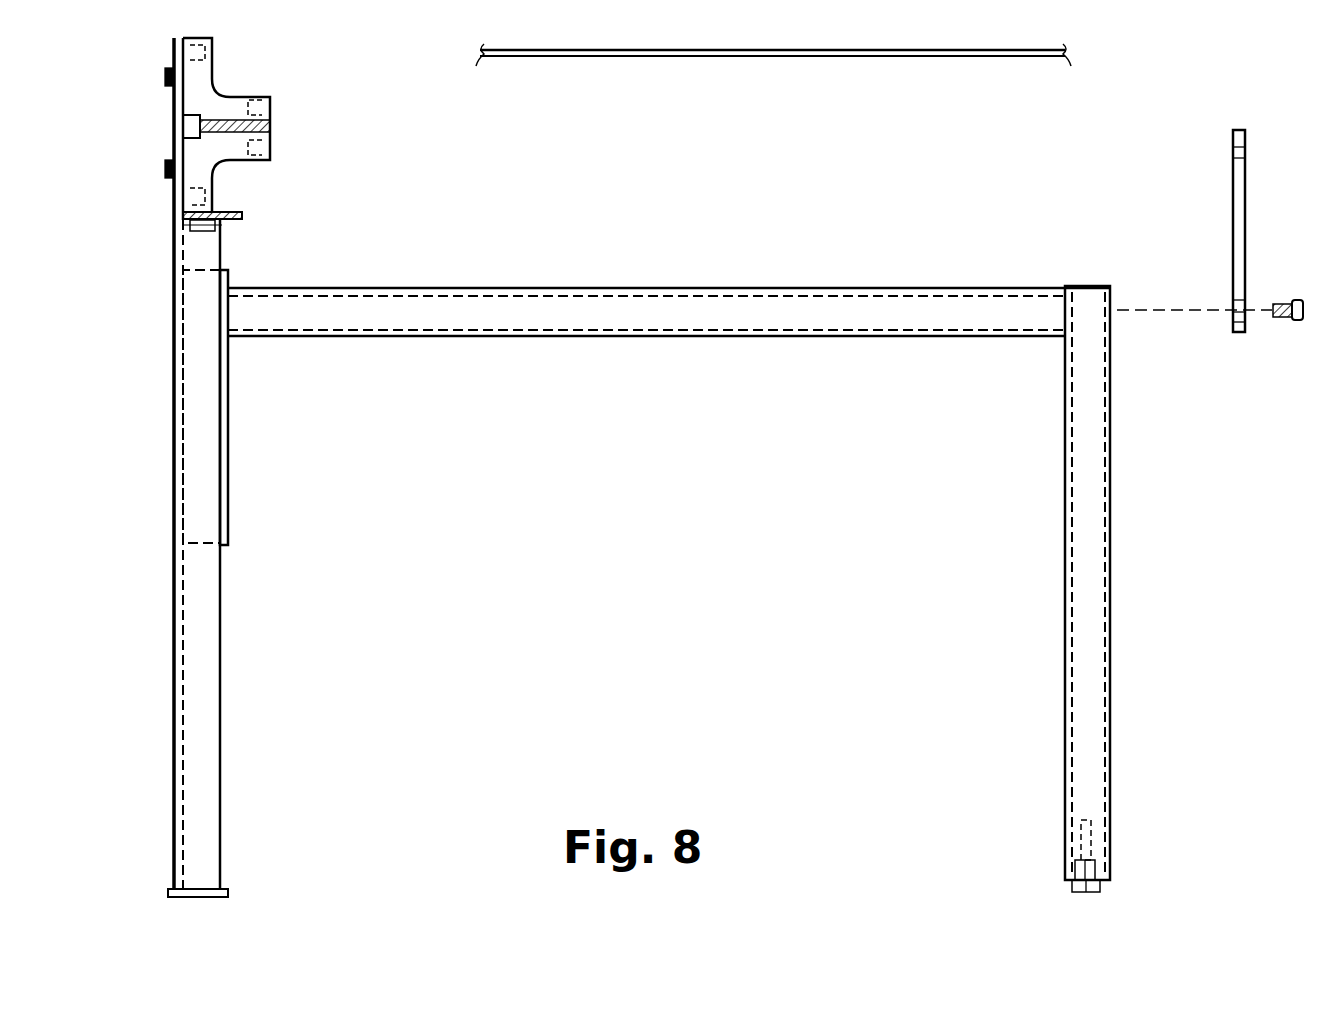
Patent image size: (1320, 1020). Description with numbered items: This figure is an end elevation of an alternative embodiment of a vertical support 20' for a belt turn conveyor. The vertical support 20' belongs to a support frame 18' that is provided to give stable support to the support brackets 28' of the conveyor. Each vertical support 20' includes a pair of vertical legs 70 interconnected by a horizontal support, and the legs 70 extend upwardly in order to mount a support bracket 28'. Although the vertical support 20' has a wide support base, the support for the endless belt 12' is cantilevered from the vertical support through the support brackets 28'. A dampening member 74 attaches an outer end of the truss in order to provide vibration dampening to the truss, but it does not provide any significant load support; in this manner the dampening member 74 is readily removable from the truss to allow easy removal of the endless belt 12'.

The endless belt 12' is at (773, 75).
The support frame 18' is at (704, 403).
The vertical support 20' is at (241, 407).
The support bracket 28' is at (247, 134).
The vertical leg 70 is at (222, 750).
The dampening member 74 is at (1245, 263).